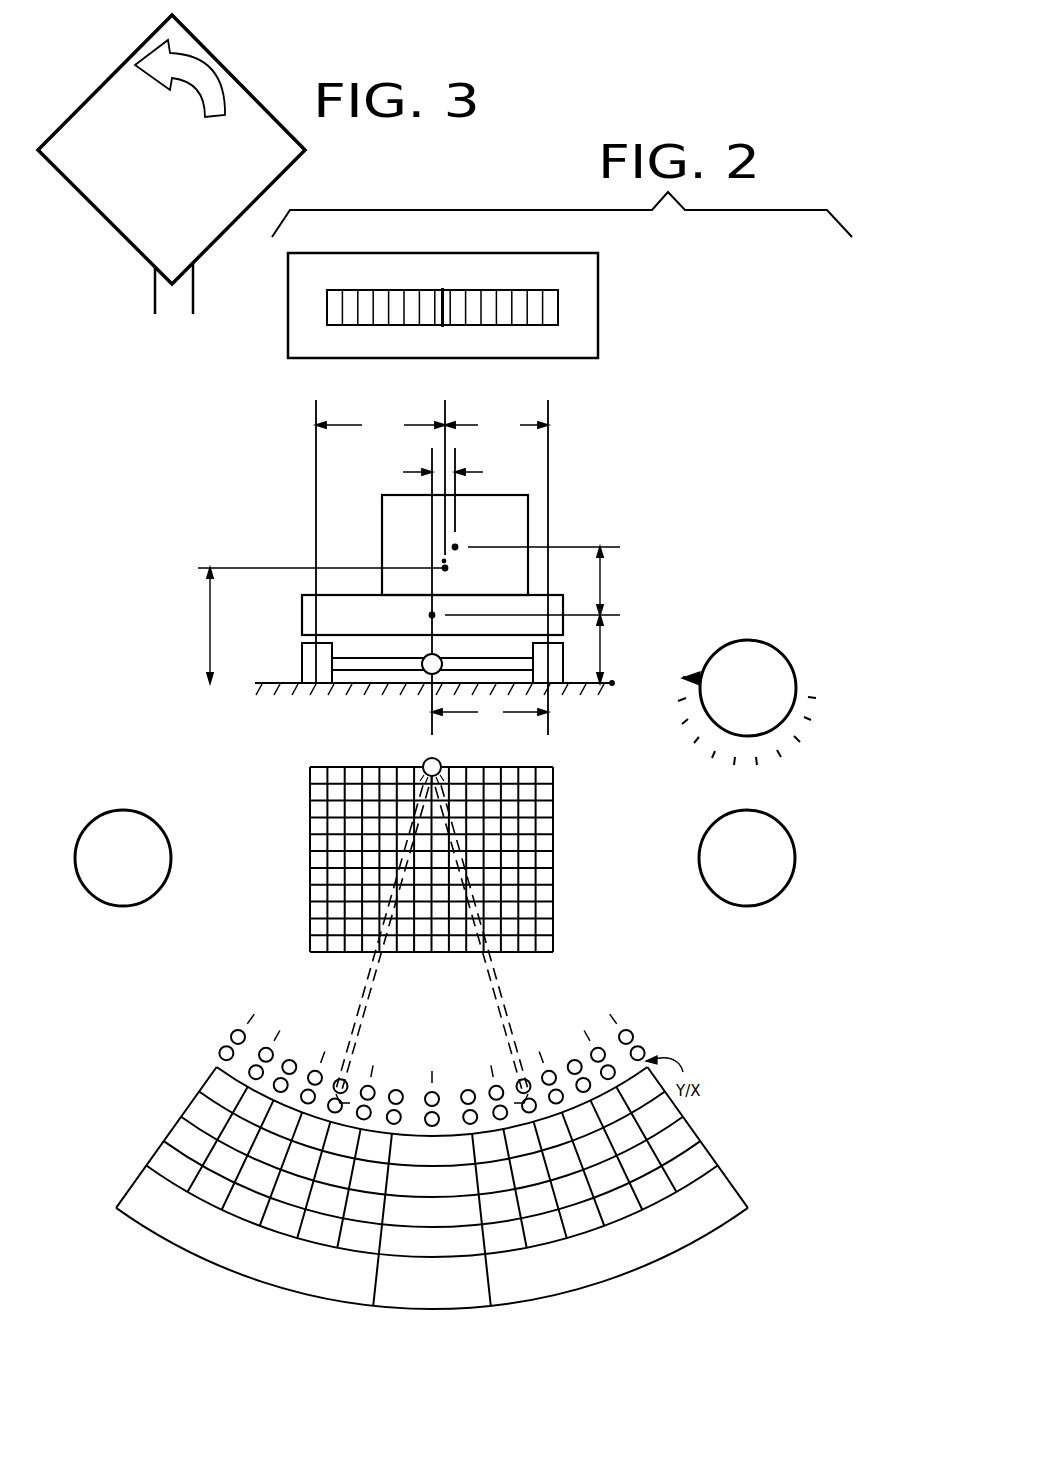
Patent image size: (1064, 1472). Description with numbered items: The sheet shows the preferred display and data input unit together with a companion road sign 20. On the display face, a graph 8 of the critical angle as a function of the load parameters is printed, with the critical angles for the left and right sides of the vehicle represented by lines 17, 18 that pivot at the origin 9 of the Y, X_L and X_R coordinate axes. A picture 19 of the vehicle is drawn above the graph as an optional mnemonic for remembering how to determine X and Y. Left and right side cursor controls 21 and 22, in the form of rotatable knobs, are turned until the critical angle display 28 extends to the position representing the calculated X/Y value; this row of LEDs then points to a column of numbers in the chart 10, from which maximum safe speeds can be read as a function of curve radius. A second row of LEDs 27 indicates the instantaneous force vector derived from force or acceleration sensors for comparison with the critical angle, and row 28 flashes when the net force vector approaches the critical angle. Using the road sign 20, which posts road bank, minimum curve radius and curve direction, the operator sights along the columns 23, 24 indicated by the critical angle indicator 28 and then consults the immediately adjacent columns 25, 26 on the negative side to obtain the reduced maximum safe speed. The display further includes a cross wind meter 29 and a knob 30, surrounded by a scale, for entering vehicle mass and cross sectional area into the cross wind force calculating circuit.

In FIG. 2, the graph 8 is at (507, 847).
In FIG. 2, the origin 9 is at (441, 762).
In FIG. 2, the chart 10 is at (164, 1151).
In FIG. 2, the left critical angle line 17 is at (353, 1022).
In FIG. 2, the right critical angle line 18 is at (511, 1022).
In FIG. 2, the picture of the vehicle 19 is at (562, 485).
In FIG. 3, the road sign 20 is at (268, 52).
In FIG. 2, the left side cursor control 21 is at (138, 883).
In FIG. 2, the right side cursor control 22 is at (758, 885).
In FIG. 2, the column 23 is at (277, 1242).
In FIG. 2, the column 24 is at (575, 1250).
In FIG. 2, the adjacent column 25 is at (317, 1257).
In FIG. 2, the adjacent column 26 is at (537, 1255).
In FIG. 2, the second row of LEDs 27 is at (228, 1032).
In FIG. 2, the critical angle display 28 is at (215, 1051).
In FIG. 2, the cross wind meter 29 is at (582, 313).
In FIG. 2, the knob 30 is at (755, 717).